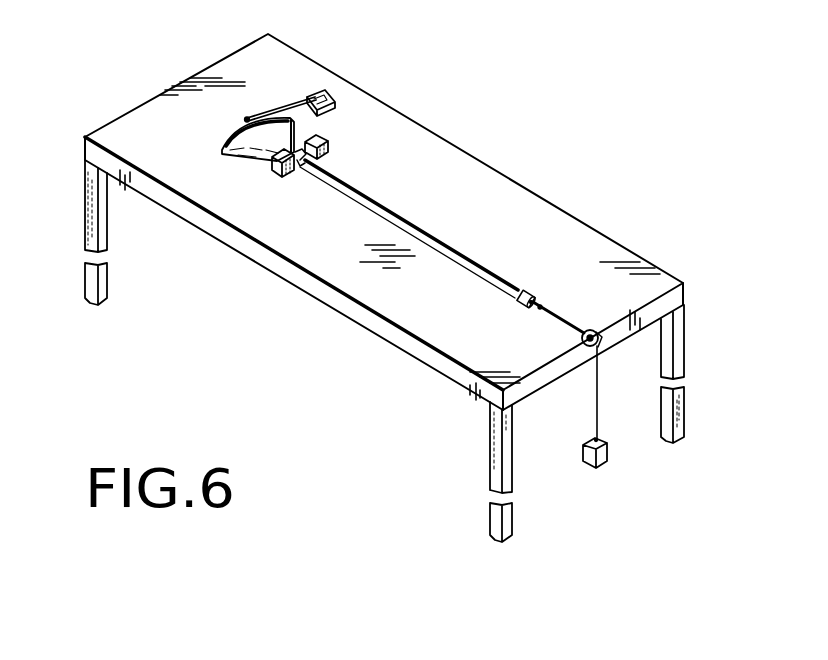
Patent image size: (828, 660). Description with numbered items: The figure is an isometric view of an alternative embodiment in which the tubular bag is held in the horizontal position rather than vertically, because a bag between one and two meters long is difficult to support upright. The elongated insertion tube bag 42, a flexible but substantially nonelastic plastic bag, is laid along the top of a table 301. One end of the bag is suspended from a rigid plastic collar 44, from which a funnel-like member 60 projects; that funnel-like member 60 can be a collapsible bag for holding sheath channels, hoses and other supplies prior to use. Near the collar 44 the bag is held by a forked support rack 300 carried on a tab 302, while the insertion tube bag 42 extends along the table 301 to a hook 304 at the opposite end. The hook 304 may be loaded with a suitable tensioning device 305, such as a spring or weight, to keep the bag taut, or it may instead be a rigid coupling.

The insertion tube bag 42 is at (487, 270).
The rigid plastic collar 44 is at (300, 165).
The funnel-like member 60 is at (252, 157).
The forked support rack 300 is at (328, 141).
The table 301 is at (372, 304).
The tab 302 is at (325, 130).
The hook 304 is at (638, 262).
The tensioning device 305 is at (608, 450).